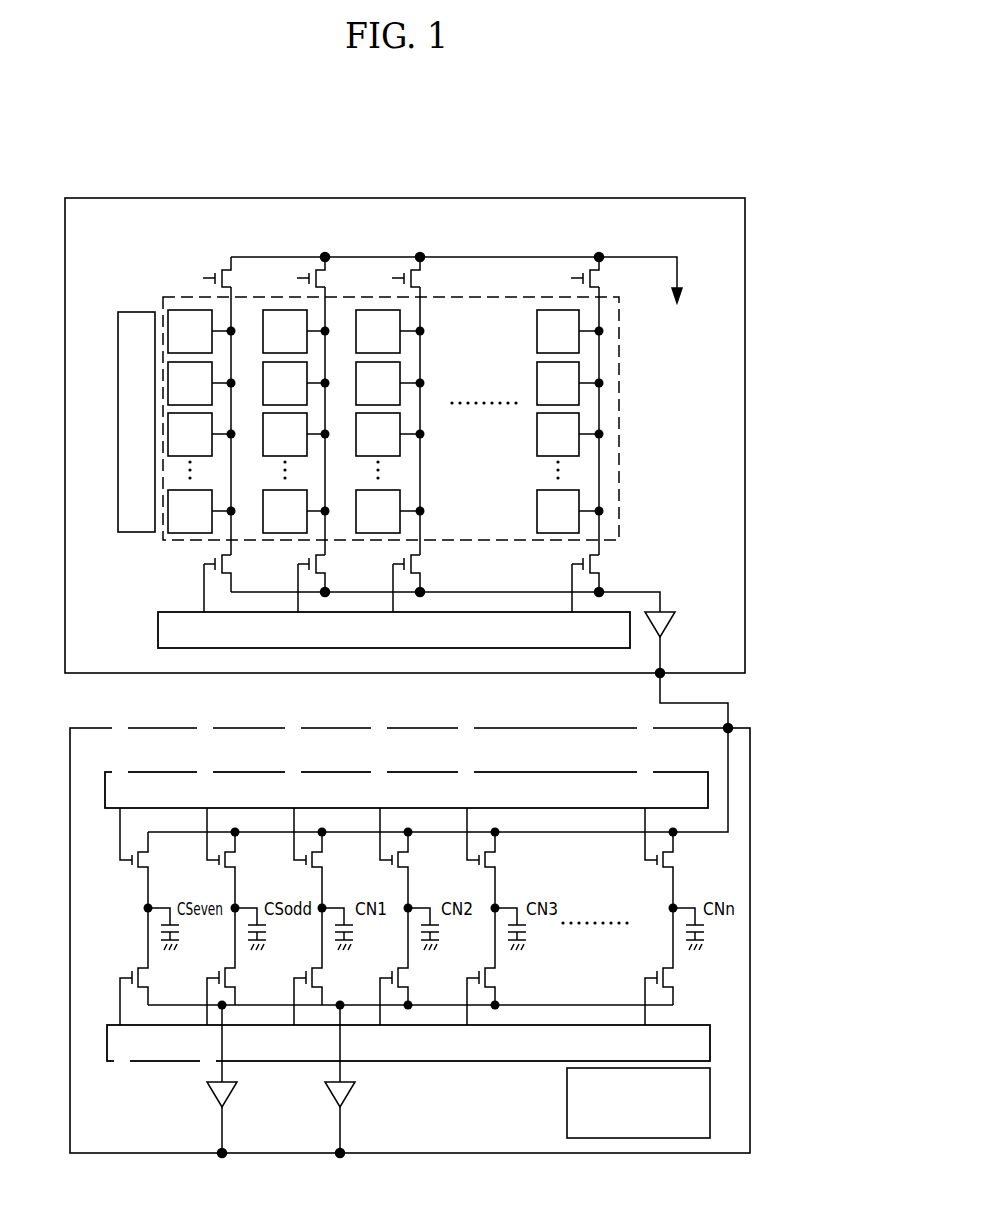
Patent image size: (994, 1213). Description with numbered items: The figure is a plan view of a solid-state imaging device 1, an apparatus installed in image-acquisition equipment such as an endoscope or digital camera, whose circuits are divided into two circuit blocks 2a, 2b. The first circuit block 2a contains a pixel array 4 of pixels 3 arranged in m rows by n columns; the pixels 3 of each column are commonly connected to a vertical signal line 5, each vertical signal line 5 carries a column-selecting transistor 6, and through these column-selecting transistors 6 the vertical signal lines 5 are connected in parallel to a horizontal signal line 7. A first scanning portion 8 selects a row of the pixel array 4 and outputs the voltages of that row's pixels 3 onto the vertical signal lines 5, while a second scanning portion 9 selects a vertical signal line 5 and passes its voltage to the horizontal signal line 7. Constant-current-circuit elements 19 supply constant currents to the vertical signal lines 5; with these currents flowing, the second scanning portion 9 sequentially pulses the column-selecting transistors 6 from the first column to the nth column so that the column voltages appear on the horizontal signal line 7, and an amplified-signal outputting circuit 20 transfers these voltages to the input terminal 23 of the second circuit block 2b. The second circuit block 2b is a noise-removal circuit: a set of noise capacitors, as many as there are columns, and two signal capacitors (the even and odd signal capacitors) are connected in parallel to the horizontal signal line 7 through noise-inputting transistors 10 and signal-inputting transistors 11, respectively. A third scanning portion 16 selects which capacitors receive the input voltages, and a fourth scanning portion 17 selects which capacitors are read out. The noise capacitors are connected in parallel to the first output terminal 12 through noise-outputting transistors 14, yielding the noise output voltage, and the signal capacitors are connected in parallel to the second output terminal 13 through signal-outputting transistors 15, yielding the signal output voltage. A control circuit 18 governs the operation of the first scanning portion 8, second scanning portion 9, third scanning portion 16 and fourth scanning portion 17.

The solid-state imaging device 1 is at (405, 165).
The first circuit block 2a is at (745, 303).
The second circuit block 2b is at (750, 912).
The pixel 3 is at (537, 371).
The pixel array 4 is at (619, 385).
The vertical signal line 5 is at (231, 470).
The column-selecting transistor 6 is at (210, 560).
The horizontal signal line 7 is at (487, 591).
The first scanning portion 8 is at (136, 312).
The second scanning portion 9 is at (158, 623).
The noise-inputting transistor 10 is at (304, 864).
The signal-inputting transistor 11 is at (130, 866).
The first output terminal 12 is at (345, 1151).
The second output terminal 13 is at (226, 1150).
The noise-outputting transistor 14 is at (310, 968).
The signal-outputting transistor 15 is at (135, 968).
The third scanning portion 16 is at (105, 776).
The fourth scanning portion 17 is at (107, 1045).
The control circuit 18 is at (710, 1106).
The constant-current-circuit element 19 is at (207, 270).
The amplified-signal outputting circuit 20 is at (682, 616).
The input terminal 23 is at (732, 732).